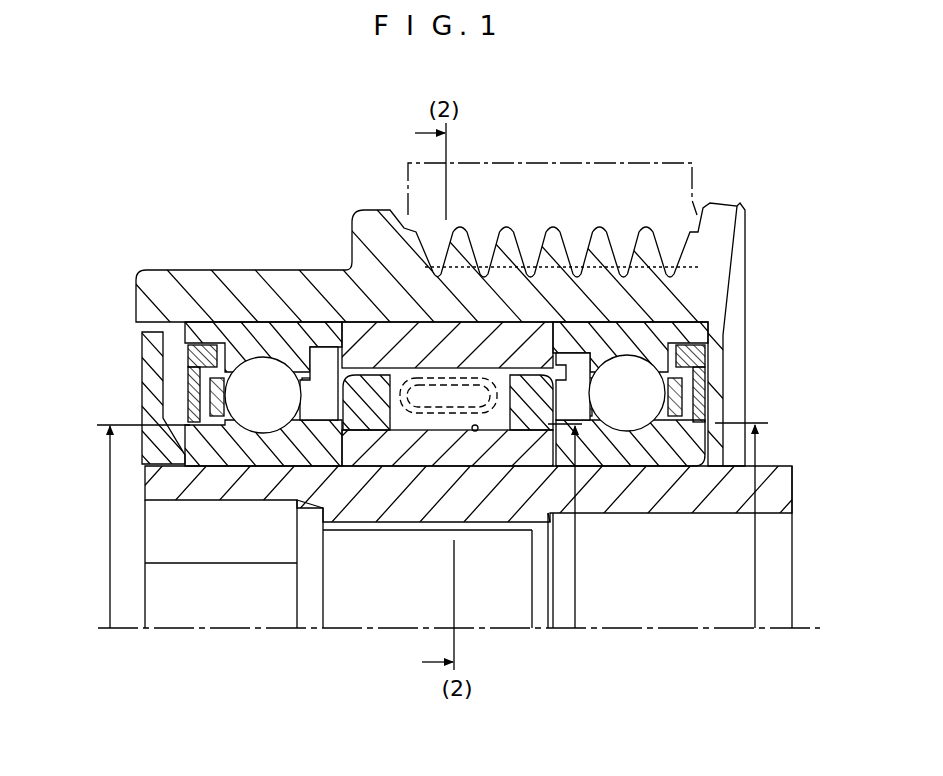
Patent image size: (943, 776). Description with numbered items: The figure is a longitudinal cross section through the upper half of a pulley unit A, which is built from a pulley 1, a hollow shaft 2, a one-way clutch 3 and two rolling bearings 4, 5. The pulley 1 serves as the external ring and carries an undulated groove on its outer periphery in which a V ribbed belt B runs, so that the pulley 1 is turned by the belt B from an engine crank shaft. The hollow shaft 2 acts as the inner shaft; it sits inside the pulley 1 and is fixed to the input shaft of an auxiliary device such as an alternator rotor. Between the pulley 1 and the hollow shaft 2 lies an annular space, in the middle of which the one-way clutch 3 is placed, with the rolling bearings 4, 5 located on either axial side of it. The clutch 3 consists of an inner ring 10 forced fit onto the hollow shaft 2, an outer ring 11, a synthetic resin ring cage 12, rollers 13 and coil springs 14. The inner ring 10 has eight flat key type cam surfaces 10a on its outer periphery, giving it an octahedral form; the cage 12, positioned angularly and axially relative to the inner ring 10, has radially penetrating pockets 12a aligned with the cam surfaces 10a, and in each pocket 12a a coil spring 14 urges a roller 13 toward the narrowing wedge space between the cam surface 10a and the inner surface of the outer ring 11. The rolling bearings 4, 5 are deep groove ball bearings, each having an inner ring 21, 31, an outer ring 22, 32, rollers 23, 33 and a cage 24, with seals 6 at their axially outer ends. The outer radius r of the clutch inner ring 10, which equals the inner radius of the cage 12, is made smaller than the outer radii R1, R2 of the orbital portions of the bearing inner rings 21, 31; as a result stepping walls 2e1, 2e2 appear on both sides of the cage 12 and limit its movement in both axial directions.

The pulley 1 is at (710, 256).
The hollow shaft 2 is at (778, 483).
The one-way clutch 3 is at (438, 375).
The rolling bearing 4 is at (669, 373).
The rolling bearing 5 is at (262, 364).
The seal 6 is at (198, 366).
The inner ring 10 is at (355, 455).
The cam surface 10a is at (476, 433).
The outer ring 11 is at (458, 333).
The cage 12 is at (368, 372).
The pocket 12a is at (425, 425).
The roller 13 is at (497, 375).
The coil spring 14 is at (410, 415).
The inner ring 21 is at (680, 460).
The outer ring 22 is at (700, 331).
The roller 23 is at (626, 412).
The cage 24 is at (197, 393).
The inner ring 31 is at (213, 455).
The outer ring 32 is at (208, 335).
The roller 33 is at (257, 423).
The stepping wall 2e1 is at (536, 440).
The stepping wall 2e2 is at (325, 512).
The pulley unit A is at (112, 203).
The V ribbed belt B is at (556, 163).
The outer radius R1 is at (751, 525).
The outer radius R2 is at (135, 526).
The outer radius r is at (572, 526).